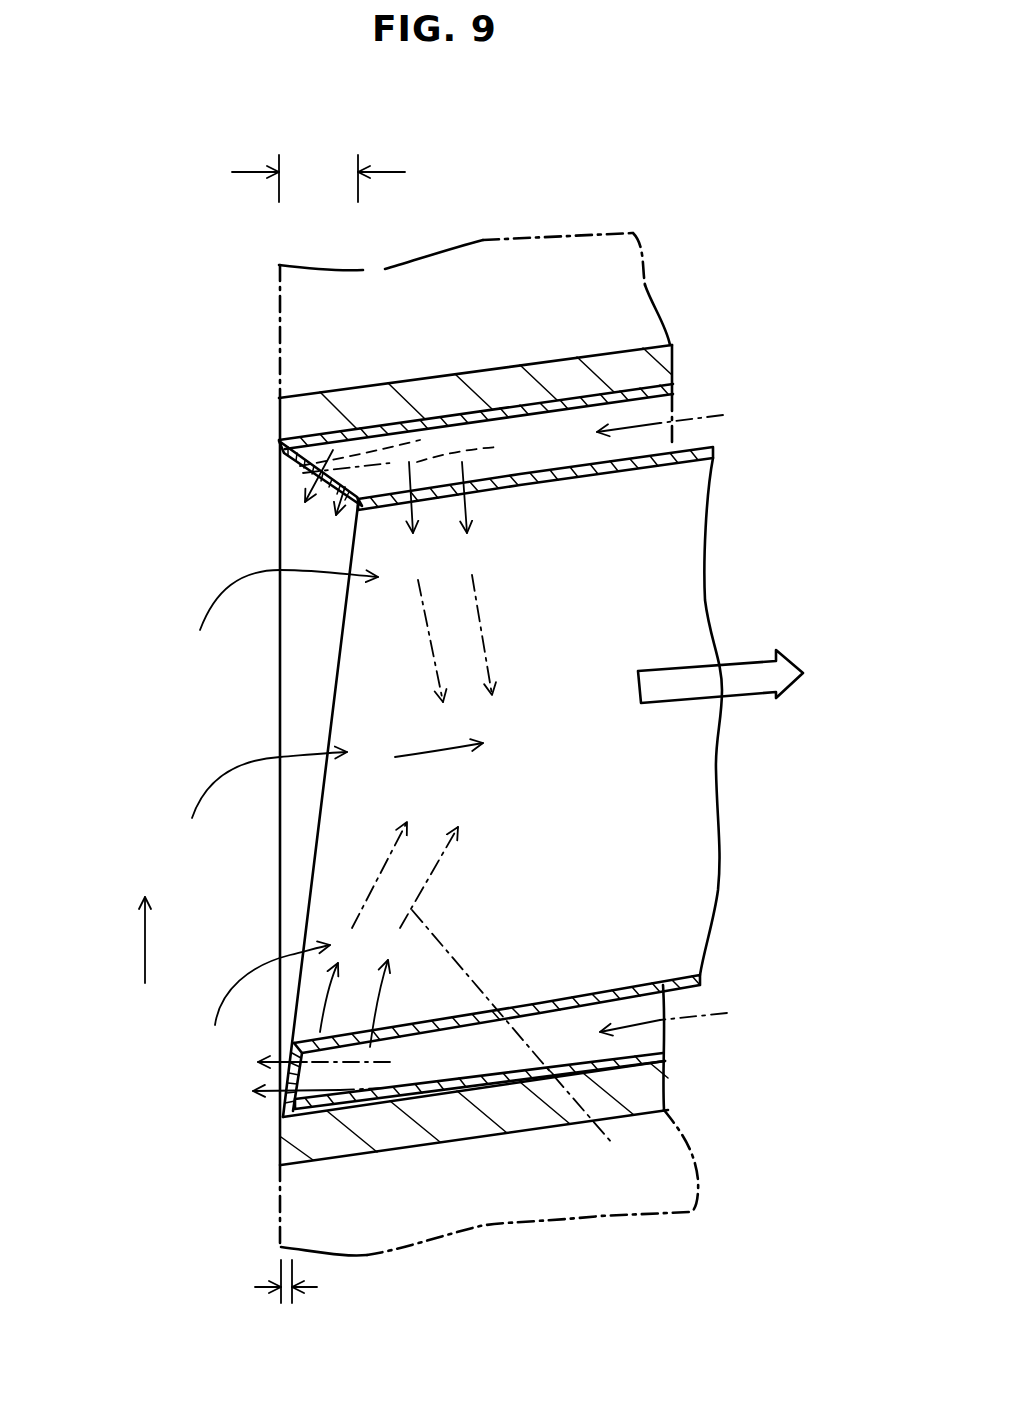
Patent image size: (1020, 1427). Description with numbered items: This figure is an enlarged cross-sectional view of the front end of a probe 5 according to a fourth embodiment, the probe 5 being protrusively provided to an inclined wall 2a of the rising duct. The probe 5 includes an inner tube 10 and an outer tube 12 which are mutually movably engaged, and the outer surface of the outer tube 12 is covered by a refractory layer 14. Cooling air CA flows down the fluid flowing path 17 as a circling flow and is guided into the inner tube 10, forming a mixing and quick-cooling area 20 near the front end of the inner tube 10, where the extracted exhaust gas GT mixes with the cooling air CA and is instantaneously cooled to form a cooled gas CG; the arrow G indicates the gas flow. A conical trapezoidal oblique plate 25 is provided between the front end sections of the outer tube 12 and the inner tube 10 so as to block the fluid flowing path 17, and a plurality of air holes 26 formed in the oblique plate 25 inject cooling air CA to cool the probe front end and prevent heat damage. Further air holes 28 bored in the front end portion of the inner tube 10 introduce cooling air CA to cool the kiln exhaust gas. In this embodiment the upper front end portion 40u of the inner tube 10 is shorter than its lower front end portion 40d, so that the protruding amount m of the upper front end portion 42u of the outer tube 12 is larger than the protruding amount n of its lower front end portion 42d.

The inclined wall 2a is at (279, 293).
The probe 5 is at (737, 460).
The inner tube 10 is at (650, 465).
The outer tube 12 is at (652, 385).
The refractory layer 14 is at (530, 363).
The fluid flowing path 17 is at (563, 428).
The mixing and quick-cooling area 20 is at (407, 713).
The oblique plate 25 is at (279, 444).
The air holes 26 is at (318, 459).
The air holes 28 is at (457, 487).
The upper front end portion 40u is at (358, 508).
The lower front end portion 40d is at (296, 1043).
The upper front end portion 42u is at (283, 415).
The lower front end portion 42d is at (281, 1155).
The cooling air CA is at (688, 420).
The cooled gas CG is at (751, 690).
The extracted exhaust gas GT is at (217, 598).
The gas flow direction G is at (140, 947).
The protruding amount m is at (318, 178).
The protruding amount n is at (285, 1287).